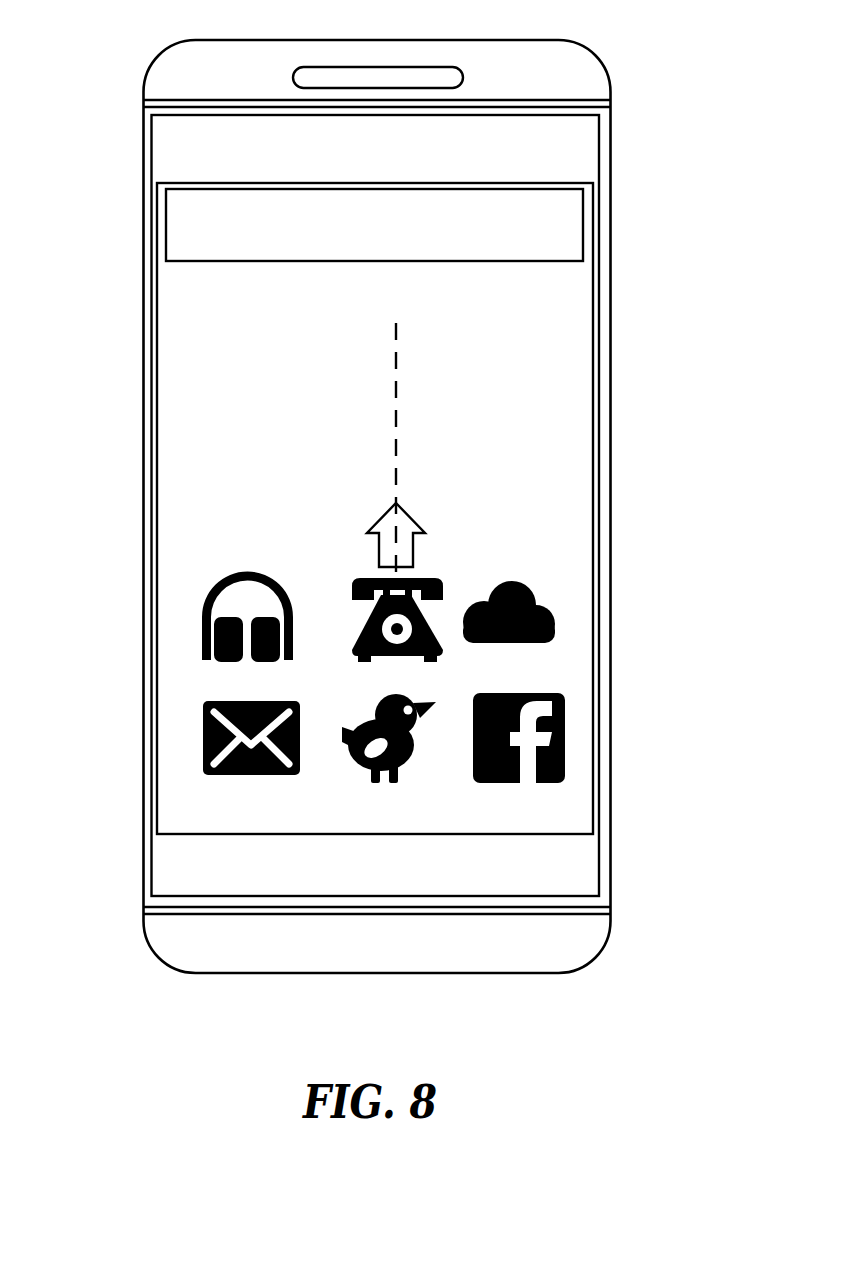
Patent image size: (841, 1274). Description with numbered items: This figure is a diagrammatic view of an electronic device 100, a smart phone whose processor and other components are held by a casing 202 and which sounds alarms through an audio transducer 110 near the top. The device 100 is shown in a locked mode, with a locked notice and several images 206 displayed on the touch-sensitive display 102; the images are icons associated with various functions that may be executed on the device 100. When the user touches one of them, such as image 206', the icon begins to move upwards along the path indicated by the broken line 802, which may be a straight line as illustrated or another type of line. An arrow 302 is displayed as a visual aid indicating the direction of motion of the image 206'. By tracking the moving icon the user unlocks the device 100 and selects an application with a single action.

The electronic device 100 is at (392, 1027).
The audio transducer 110 is at (331, 78).
The casing 202 is at (143, 358).
The touch-sensitive display 102 is at (200, 478).
The broken line 802 is at (396, 418).
The arrow 302 is at (376, 522).
The image 206' is at (340, 594).
The images 206 is at (381, 701).